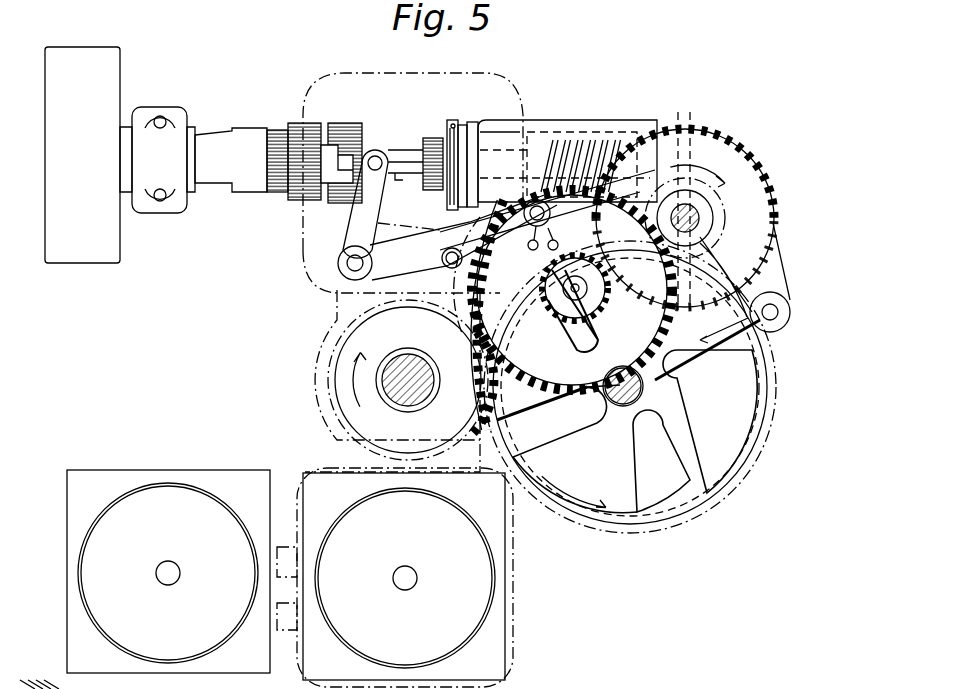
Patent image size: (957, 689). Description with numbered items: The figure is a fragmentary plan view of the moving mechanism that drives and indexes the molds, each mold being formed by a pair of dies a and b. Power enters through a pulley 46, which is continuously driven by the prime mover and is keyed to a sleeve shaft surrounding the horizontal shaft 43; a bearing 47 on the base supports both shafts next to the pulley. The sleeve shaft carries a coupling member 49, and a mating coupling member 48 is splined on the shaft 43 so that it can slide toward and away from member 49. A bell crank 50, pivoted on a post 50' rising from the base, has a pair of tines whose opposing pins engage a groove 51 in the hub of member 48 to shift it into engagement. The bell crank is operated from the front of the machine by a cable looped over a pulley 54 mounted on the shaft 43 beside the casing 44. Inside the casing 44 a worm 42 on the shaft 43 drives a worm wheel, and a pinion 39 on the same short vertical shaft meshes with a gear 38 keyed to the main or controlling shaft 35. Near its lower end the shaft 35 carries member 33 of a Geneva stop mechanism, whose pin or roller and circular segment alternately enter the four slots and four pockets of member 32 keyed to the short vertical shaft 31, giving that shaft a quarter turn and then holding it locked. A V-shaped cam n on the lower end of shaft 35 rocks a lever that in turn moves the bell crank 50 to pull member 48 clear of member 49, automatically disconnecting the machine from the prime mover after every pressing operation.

The short vertical shaft 31 is at (610, 417).
The Geneva stop member 32 is at (630, 387).
The Geneva stop member 33 is at (735, 323).
The main or controlling shaft 35 is at (700, 223).
The gear 38 is at (750, 140).
The pinion 39 is at (576, 303).
The worm 42 is at (605, 140).
The horizontal shaft 43 is at (408, 148).
The casing 44 is at (537, 122).
The pulley 46 is at (82, 155).
The bearing 47 is at (193, 160).
The coupling member 48 is at (345, 127).
The coupling member 49 is at (305, 137).
The bell crank 50 is at (512, 225).
The post 50' is at (330, 269).
The groove 51 is at (373, 150).
The pulley 54 is at (447, 127).
The die a is at (316, 474).
The die b is at (150, 472).
The V-shaped cam n is at (686, 202).